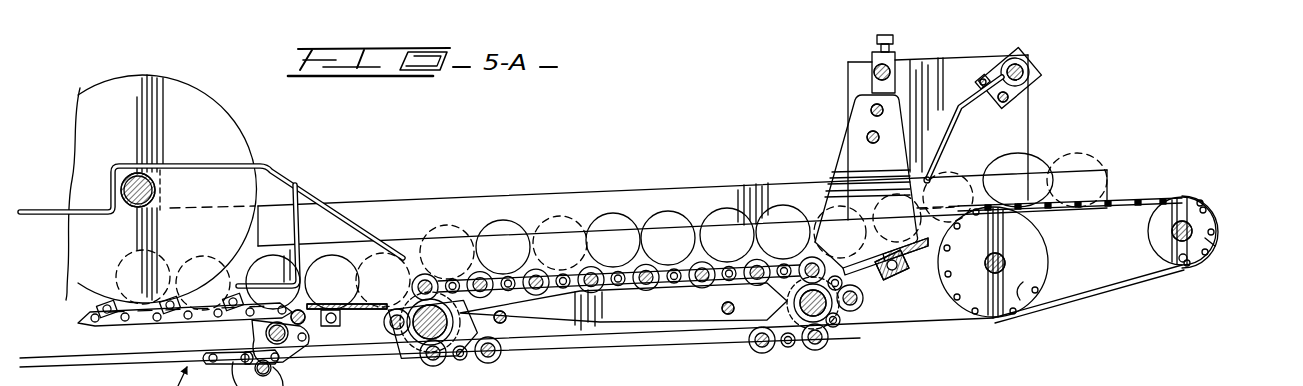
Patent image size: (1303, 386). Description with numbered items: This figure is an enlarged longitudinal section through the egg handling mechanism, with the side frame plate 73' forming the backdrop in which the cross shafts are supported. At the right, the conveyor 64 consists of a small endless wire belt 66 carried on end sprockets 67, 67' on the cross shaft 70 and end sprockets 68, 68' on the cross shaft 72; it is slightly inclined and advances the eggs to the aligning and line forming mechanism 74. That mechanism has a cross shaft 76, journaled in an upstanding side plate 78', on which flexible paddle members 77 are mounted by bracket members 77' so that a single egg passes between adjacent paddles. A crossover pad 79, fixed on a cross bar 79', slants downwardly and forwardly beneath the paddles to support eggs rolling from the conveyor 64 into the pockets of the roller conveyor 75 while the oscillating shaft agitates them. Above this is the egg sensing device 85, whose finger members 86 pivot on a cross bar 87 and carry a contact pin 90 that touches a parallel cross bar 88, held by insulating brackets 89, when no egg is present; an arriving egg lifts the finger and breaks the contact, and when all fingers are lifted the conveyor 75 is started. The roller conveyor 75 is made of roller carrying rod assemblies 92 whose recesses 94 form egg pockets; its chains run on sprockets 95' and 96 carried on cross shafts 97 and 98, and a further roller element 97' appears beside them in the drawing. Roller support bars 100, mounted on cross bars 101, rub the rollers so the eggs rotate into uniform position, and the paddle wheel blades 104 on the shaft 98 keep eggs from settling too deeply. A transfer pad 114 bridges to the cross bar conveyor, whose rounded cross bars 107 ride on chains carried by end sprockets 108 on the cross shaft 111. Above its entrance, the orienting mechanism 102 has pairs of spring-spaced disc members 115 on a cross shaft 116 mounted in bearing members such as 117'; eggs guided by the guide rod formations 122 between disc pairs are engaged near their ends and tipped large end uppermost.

The conveyor 64 is at (1134, 191).
The wire belt 66 is at (1150, 200).
The end sprocket 67 is at (1195, 273).
The end sprocket 67' is at (1237, 263).
The end sprocket 68 is at (993, 279).
The end sprocket 68' is at (1046, 310).
The cross shaft 70 is at (1192, 230).
The cross shaft 72 is at (1005, 263).
The side frame plate 73' is at (563, 262).
The aligning and line forming mechanism 74 is at (827, 85).
The roller conveyor 75 is at (757, 358).
The cross shaft 76 is at (888, 76).
The paddle member 77 is at (859, 181).
The bracket member 77' is at (870, 50).
The side plate 78' is at (943, 99).
The crossover pad 79 is at (907, 277).
The cross bar 79' is at (885, 281).
The egg sensing device 85 is at (1046, 62).
The finger member 86 is at (953, 133).
The cross bar 87 is at (1031, 78).
The cross bar 88 is at (1010, 100).
The insulating bracket 89 is at (995, 60).
The contact forming bolt or pin 90 is at (984, 80).
The roller carrying rod assembly 92 is at (525, 266).
The recess 94 is at (498, 358).
The sprocket 95' is at (834, 321).
The sprocket 96 is at (423, 352).
The cross shaft 97 is at (818, 348).
The chain roller 97' is at (447, 354).
The cross shaft 98 is at (412, 347).
The roller support bar 100 is at (605, 313).
The cross bar 101 is at (507, 316).
The orienting mechanism 102 is at (207, 90).
The paddle arm or blade 104 is at (447, 293).
The cross bar 107 is at (172, 294).
The end sprocket 108 is at (250, 332).
The cross shaft 111 is at (295, 352).
The transfer pad 114 is at (333, 293).
The disc member 115 is at (228, 128).
The cross shaft 116 is at (139, 177).
The bearing member 117' is at (124, 159).
The guide wire or guide rod formation 122 is at (300, 174).